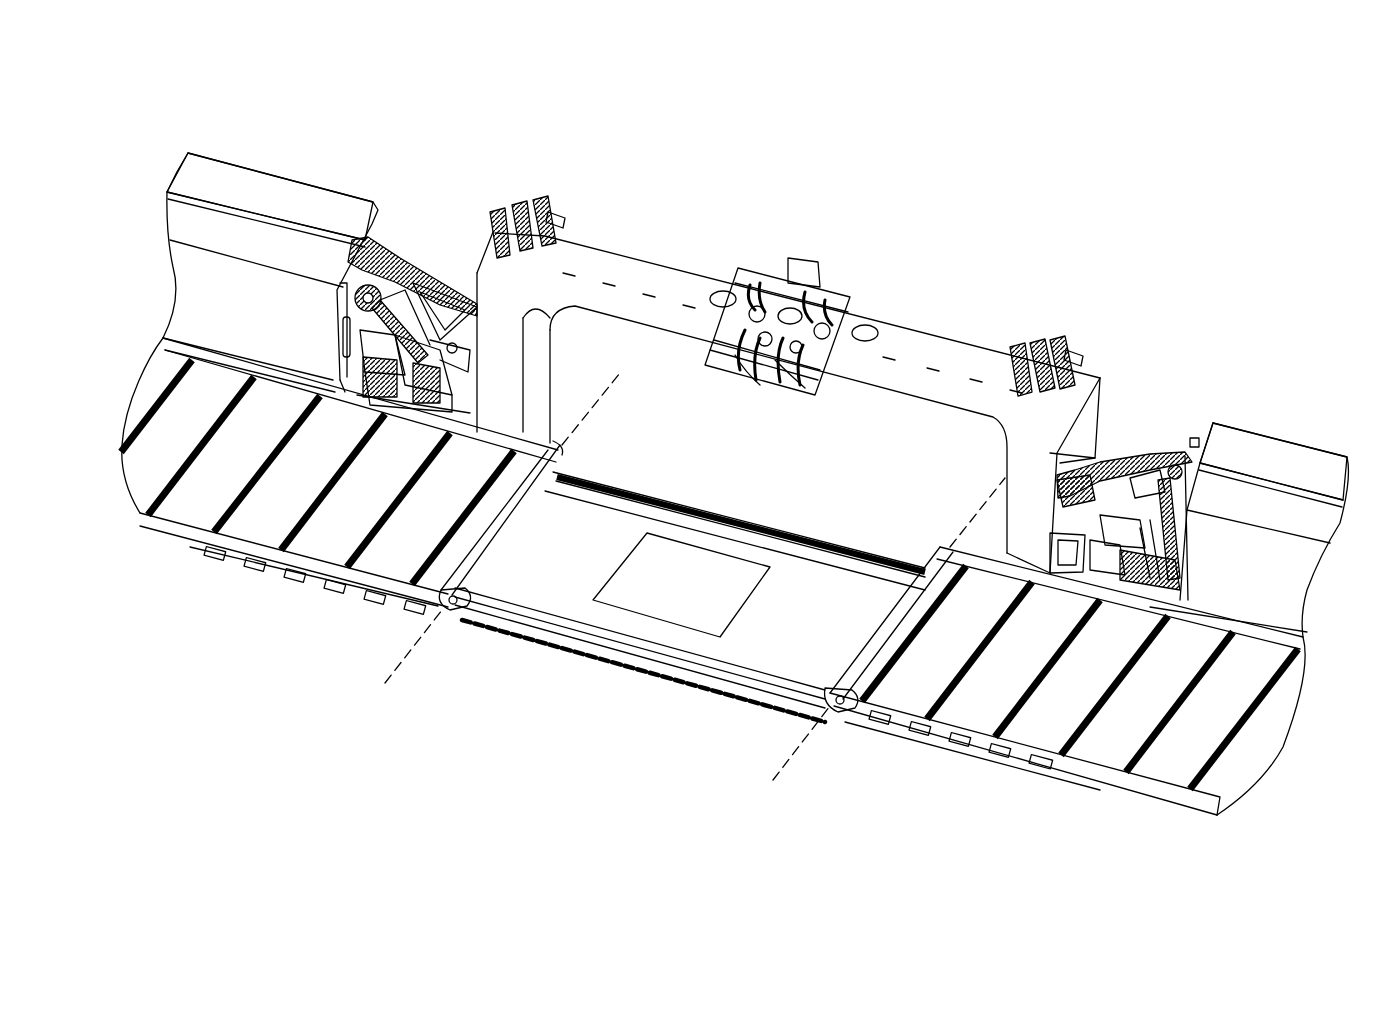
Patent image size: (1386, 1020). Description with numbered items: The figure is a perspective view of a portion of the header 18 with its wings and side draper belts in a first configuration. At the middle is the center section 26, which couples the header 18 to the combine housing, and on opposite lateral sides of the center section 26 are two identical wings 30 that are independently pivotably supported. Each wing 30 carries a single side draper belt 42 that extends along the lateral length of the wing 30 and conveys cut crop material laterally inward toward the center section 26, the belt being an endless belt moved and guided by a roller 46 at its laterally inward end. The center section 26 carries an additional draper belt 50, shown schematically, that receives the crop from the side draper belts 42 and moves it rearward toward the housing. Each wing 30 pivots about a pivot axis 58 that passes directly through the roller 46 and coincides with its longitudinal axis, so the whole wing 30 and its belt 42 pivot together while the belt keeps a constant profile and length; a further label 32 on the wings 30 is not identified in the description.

The header 18 is at (1168, 293).
The center section 26 is at (652, 259).
The wing 30 is at (287, 188).
The seat module top panel 32 is at (220, 178).
The side draper belt 42 is at (196, 516).
The roller 46 is at (447, 614).
The additional draper belt 50 is at (668, 591).
The pivot axis 58 is at (405, 646).